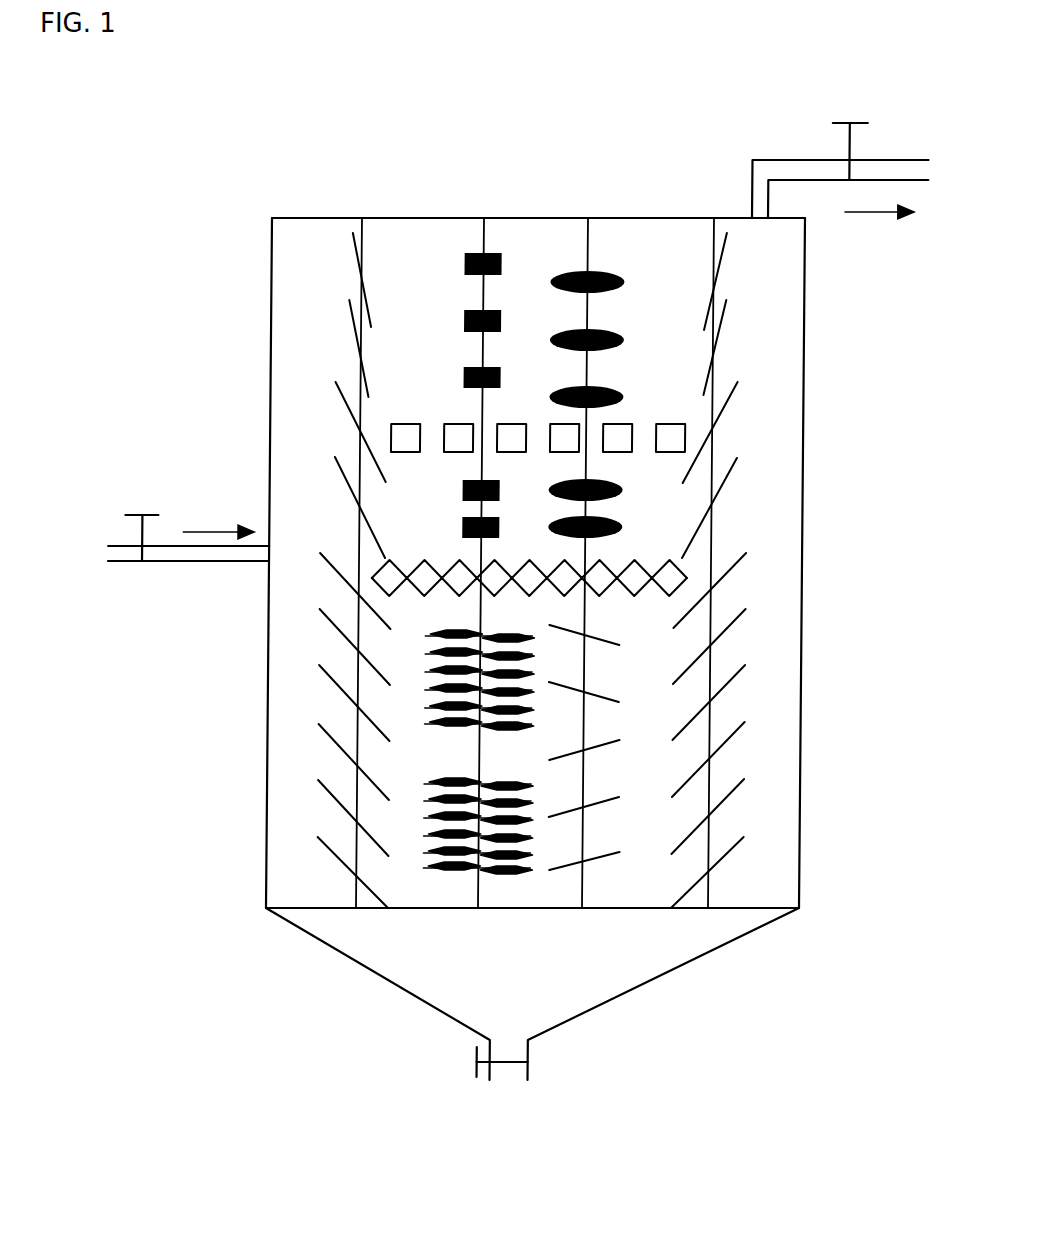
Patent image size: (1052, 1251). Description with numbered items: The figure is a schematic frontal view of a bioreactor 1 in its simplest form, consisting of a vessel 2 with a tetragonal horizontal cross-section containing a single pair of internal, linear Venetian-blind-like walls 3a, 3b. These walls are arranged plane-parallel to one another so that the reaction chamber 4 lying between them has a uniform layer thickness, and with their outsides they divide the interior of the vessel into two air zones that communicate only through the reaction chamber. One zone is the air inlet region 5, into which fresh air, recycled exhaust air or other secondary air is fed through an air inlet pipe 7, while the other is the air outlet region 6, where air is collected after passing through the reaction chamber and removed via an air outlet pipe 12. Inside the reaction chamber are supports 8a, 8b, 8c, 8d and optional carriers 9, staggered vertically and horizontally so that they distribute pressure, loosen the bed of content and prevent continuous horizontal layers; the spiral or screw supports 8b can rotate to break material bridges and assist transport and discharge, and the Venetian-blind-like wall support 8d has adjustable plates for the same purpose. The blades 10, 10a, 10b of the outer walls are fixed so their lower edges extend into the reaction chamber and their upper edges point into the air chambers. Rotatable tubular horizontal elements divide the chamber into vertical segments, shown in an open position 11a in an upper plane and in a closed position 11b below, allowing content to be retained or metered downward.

The bioreactor 1 is at (235, 218).
The vessel 2 is at (308, 218).
The Venetian-blind-like wall 3a is at (360, 452).
The Venetian-blind-like wall 3b is at (716, 543).
The reaction chamber 4 is at (415, 492).
The air inlet region 5 is at (292, 616).
The air outlet region 6 is at (766, 366).
The air inlet pipe 7 is at (215, 561).
The support 8a is at (465, 322).
The spiral or screw support 8b is at (436, 814).
The support 8c is at (628, 282).
The Venetian-blind-like wall support 8d is at (645, 752).
The carrier 9 is at (480, 756).
The blade 10 is at (332, 675).
The blade 10a is at (355, 242).
The blade 10b is at (347, 399).
The horizontal elements in open position 11a is at (680, 437).
The horizontal elements in closed position 11b is at (683, 579).
The air outlet pipe 12 is at (752, 180).